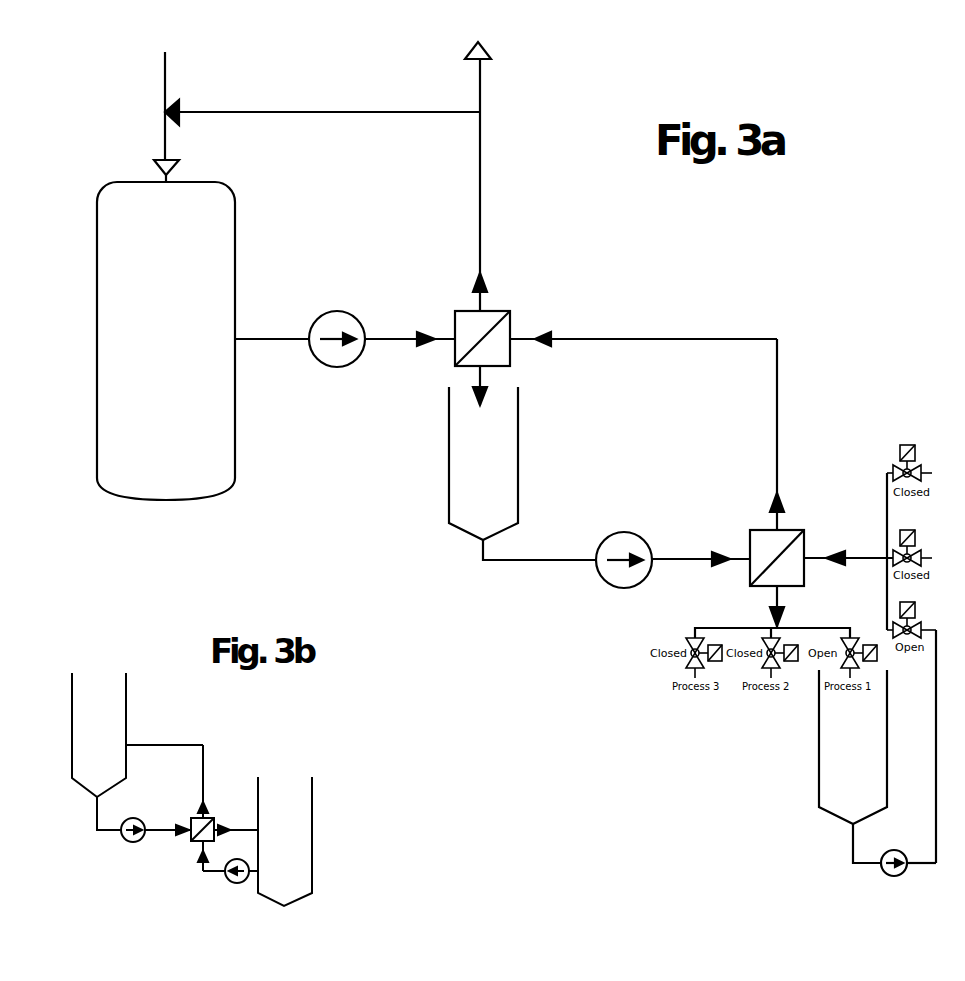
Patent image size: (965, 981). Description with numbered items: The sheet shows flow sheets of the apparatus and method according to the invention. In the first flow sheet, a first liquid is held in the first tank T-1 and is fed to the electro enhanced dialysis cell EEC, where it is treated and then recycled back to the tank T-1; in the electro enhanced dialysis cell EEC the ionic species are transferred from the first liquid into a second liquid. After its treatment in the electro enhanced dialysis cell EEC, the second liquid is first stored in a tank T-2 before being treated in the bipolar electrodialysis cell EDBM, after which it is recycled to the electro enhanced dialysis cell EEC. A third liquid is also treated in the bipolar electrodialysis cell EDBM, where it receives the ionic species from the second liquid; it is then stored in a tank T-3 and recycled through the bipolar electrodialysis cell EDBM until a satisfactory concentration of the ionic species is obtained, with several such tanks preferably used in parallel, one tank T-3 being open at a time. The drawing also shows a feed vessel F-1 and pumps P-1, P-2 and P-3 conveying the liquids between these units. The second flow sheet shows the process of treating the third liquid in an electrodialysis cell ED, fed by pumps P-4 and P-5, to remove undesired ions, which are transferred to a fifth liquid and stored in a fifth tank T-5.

In FIG. 3a, the feed tank F-1 is at (288, 276).
In FIG. 3a, the pump P-1 is at (321, 327).
In FIG. 3a, the electro enhanced dialysis cell EEC is at (447, 223).
In FIG. 3a, the first tank T-1 is at (522, 473).
In FIG. 3a, the pump P-2 is at (608, 548).
In FIG. 3a, the bipolar electrodialysis cell EDBM is at (747, 565).
In FIG. 3a, the tank T-2 is at (853, 766).
In FIG. 3a, the pump P-3 is at (891, 883).
In FIG. 3b, the tank T-3 is at (137, 751).
In FIG. 3b, the pump P-4 is at (120, 839).
In FIG. 3b, the electrodialysis cell ED is at (195, 808).
In FIG. 3b, the fifth tank T-5 is at (285, 841).
In FIG. 3b, the pump P-5 is at (232, 883).